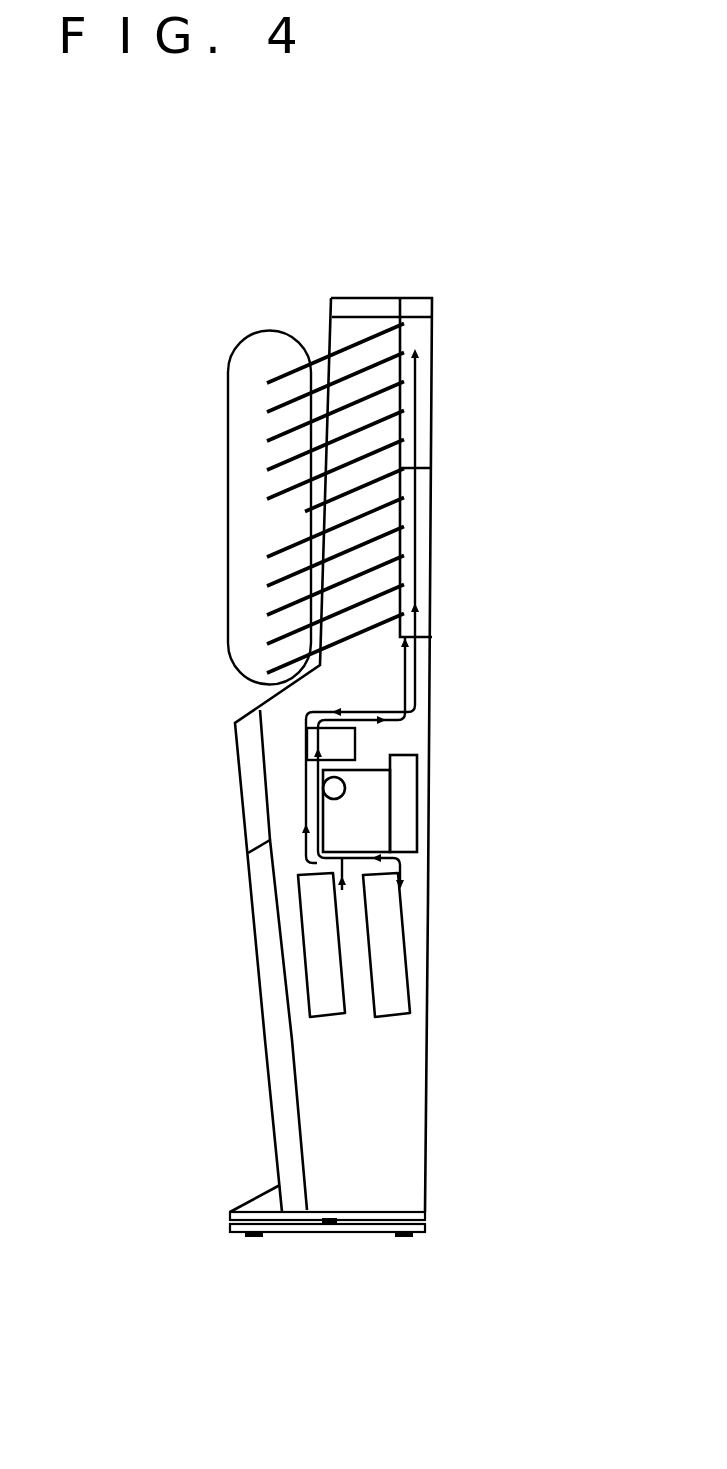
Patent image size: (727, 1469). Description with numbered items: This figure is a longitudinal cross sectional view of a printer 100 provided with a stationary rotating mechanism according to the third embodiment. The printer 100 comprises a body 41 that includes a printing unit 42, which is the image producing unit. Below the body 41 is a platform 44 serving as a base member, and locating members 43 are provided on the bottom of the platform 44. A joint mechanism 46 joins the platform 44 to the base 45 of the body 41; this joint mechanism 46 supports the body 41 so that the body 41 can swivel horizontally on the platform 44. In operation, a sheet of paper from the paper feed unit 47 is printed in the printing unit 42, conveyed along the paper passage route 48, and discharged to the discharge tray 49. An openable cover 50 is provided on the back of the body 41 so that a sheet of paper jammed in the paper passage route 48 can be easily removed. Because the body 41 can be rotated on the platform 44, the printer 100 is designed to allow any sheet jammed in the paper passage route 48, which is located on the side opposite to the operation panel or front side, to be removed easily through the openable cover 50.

The printer 100 is at (426, 243).
The body 41 is at (434, 811).
The printing unit 42 is at (370, 805).
The locating members 43 is at (395, 1237).
The platform 44 is at (425, 1232).
The base 45 is at (425, 1212).
The joint mechanism 46 is at (333, 1218).
The paper feed unit 47 is at (393, 955).
The paper passage route 48 is at (413, 438).
The discharge tray 49 is at (250, 455).
The openable cover 50 is at (435, 452).